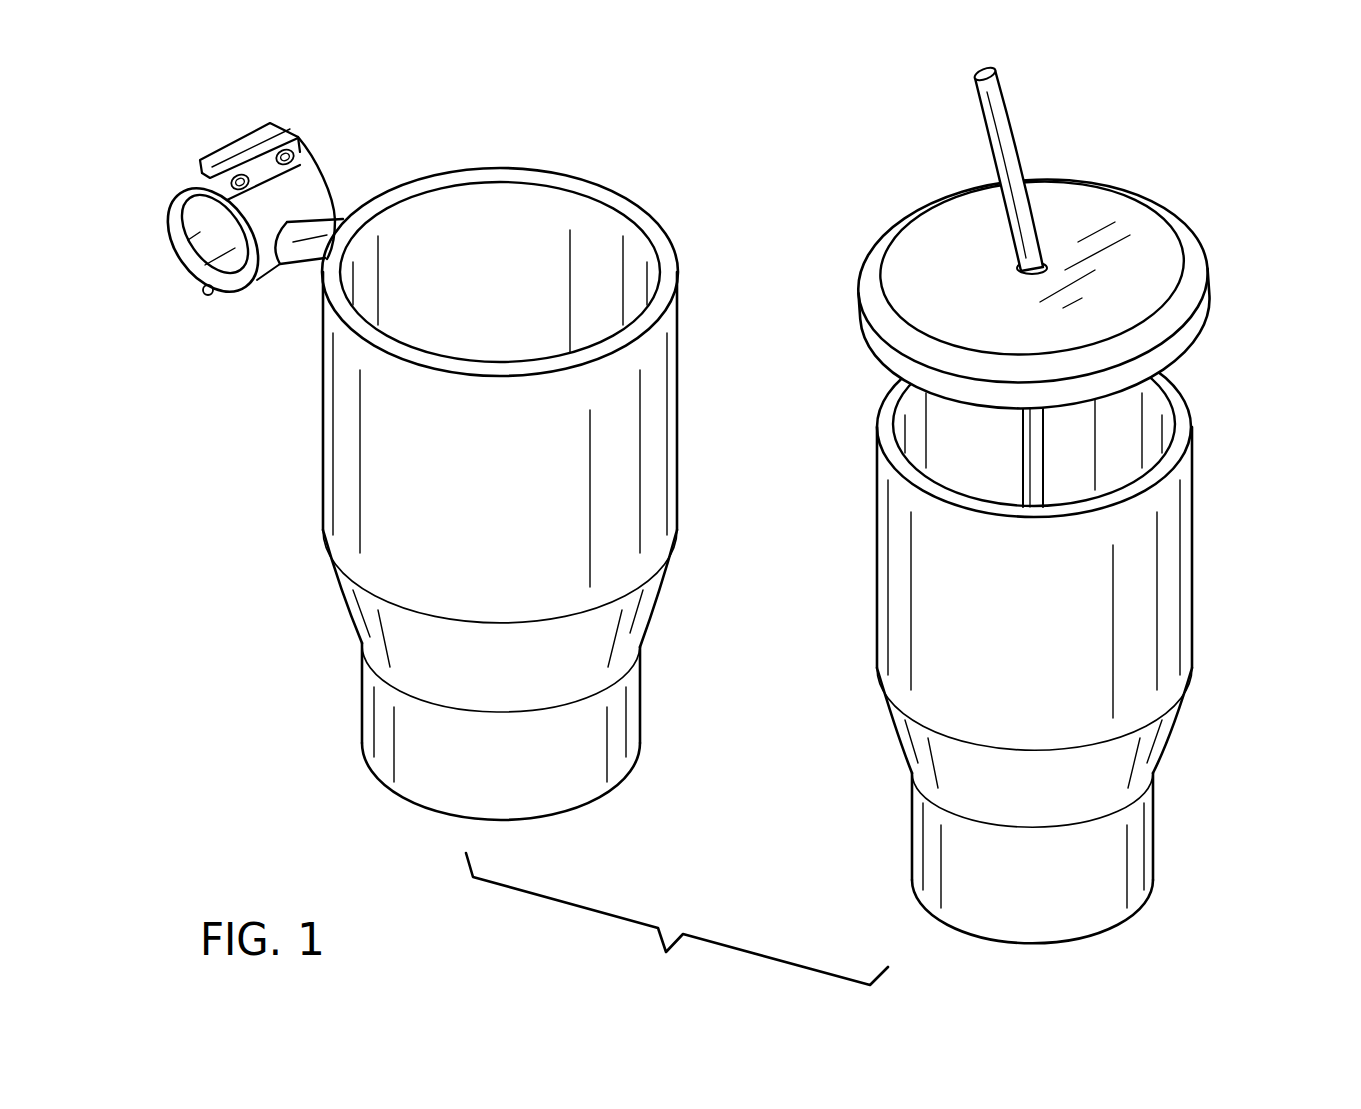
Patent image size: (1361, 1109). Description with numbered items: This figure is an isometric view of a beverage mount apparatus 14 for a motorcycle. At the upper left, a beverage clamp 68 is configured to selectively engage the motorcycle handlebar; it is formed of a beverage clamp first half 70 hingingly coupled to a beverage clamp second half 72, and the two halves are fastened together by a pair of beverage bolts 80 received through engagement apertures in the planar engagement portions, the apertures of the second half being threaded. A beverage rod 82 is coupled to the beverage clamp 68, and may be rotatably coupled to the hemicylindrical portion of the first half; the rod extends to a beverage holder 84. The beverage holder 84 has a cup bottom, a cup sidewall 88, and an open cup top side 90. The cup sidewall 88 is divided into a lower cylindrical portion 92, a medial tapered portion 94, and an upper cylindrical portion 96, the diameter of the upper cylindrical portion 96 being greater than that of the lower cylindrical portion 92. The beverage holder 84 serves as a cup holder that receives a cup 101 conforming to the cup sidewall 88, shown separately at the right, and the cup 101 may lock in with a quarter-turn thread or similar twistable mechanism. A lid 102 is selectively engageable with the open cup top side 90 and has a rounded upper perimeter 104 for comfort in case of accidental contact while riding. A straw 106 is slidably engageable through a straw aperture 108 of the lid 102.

The beverage mount apparatus 14 is at (722, 177).
The beverage clamp 68 is at (317, 192).
The beverage clamp first half 70 is at (260, 283).
The beverage clamp second half 72 is at (185, 247).
The beverage bolts 80 is at (281, 150).
The beverage rod 82 is at (318, 262).
The beverage holder 84 is at (322, 463).
The cup sidewall 88 is at (350, 517).
The open cup top side 90 is at (607, 202).
The lower cylindrical portion 92 is at (640, 652).
The medial tapered portion 94 is at (677, 540).
The upper cylindrical portion 96 is at (680, 275).
The cup 101 is at (1173, 548).
The lid 102 is at (1152, 245).
The rounded upper perimeter 104 is at (1193, 292).
The straw 106 is at (996, 126).
The straw aperture 108 is at (1046, 264).